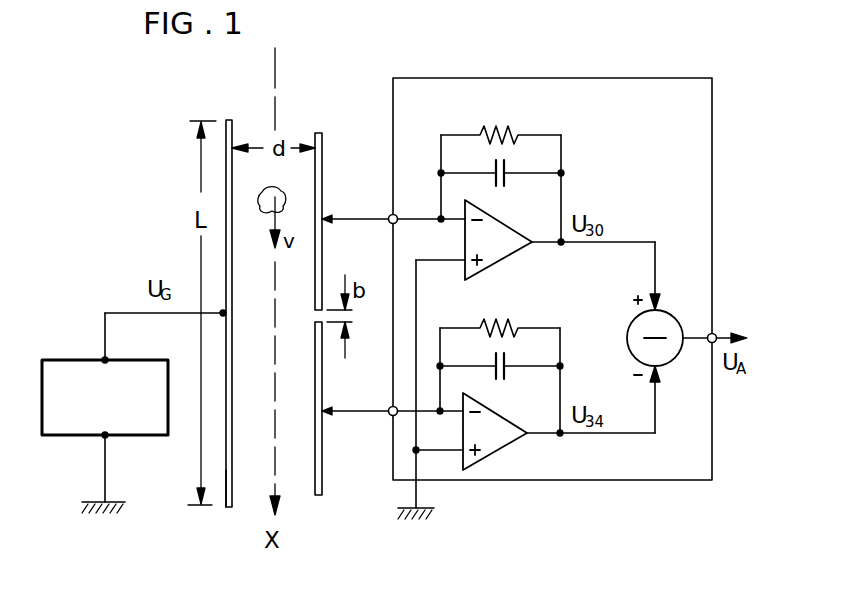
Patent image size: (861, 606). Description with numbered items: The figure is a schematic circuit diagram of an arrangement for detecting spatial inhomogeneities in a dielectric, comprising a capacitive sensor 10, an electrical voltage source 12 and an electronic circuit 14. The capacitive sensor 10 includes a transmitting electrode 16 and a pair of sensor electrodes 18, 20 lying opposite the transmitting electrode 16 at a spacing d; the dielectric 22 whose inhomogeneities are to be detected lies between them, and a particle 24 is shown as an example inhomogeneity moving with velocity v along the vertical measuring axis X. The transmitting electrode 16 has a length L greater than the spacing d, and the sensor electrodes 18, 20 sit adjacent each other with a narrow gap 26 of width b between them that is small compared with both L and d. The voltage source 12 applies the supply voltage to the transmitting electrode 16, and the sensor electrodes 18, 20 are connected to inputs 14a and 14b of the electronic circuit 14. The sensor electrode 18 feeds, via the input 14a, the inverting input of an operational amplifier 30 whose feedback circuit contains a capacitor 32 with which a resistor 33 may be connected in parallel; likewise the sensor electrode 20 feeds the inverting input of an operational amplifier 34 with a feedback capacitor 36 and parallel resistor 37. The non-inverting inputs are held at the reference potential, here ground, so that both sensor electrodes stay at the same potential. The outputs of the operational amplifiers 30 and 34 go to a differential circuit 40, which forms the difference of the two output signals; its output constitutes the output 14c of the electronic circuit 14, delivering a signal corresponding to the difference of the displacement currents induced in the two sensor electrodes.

The capacitive sensor 10 is at (310, 104).
The electrical voltage source 12 is at (63, 370).
The electronic circuit 14 is at (646, 90).
The input 14a is at (390, 215).
The input 14b is at (390, 416).
The output 14c is at (716, 331).
The transmitting electrode 16 is at (228, 120).
The sensor electrode 18 is at (326, 135).
The sensor electrode 20 is at (324, 480).
The dielectric 22 is at (250, 480).
The particle 24 is at (264, 202).
The gap 26 is at (314, 318).
The operational amplifier 30 is at (497, 250).
The capacitor 32 is at (508, 180).
The resistor 33 is at (514, 138).
The operational amplifier 34 is at (500, 442).
The capacitor 36 is at (508, 374).
The resistor 37 is at (510, 332).
The differential circuit 40 is at (670, 322).